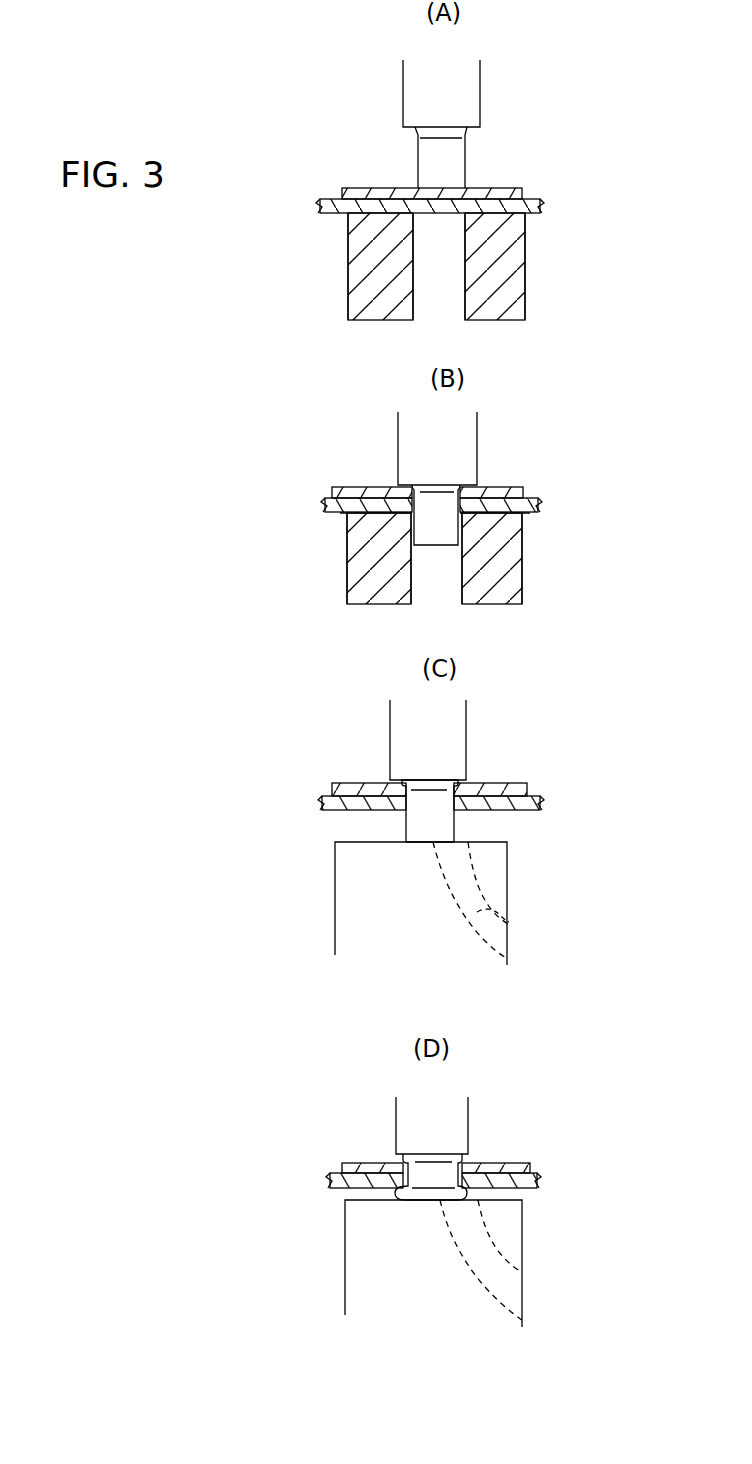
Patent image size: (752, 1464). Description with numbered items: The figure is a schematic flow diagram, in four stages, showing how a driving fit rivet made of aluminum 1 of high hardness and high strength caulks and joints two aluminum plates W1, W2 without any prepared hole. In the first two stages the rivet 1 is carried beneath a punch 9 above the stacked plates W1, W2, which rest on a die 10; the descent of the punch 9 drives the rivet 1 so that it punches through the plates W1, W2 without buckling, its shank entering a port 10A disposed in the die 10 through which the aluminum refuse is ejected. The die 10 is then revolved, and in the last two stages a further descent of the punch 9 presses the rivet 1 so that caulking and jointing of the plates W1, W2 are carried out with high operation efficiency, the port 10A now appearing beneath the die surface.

The driving fit rivet made of aluminum 1 is at (483, 160).
The punch 9 is at (480, 86).
The die 10 is at (525, 297).
The port 10A is at (445, 283).
The aluminum plate W1 is at (522, 190).
The aluminum plate W2 is at (540, 213).